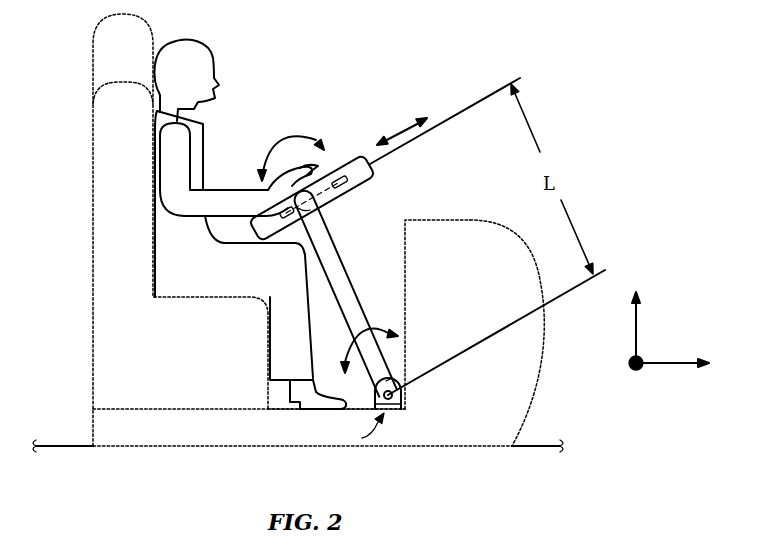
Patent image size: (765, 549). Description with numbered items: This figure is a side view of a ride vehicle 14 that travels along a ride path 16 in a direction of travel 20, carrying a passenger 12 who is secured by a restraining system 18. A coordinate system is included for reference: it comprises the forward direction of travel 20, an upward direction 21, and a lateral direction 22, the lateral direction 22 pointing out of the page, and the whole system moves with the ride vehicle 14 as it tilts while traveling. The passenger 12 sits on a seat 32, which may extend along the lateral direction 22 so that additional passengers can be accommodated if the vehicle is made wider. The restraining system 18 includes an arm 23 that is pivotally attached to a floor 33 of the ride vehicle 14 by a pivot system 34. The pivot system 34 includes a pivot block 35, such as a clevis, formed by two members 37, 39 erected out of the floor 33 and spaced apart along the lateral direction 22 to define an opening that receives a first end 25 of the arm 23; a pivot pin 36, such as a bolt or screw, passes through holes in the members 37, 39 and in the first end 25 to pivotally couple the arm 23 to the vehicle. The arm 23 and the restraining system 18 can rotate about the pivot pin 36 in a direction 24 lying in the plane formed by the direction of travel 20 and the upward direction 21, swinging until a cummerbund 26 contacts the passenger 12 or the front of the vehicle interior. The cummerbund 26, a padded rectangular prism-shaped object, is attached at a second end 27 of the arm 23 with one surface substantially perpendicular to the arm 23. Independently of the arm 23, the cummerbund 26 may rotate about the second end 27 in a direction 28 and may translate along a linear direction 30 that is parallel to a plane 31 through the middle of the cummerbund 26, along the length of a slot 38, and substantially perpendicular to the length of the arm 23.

The passenger 12 is at (189, 42).
The ride vehicle 14 is at (541, 260).
The ride path 16 is at (530, 450).
The restraining system 18 is at (387, 223).
The direction of travel 20 is at (676, 358).
The upward direction 21 is at (638, 320).
The lateral direction 22 is at (638, 373).
The arm 23 is at (342, 264).
The direction 24 is at (363, 328).
The first end 25 is at (386, 381).
The cummerbund 26 is at (358, 201).
The second end 27 is at (322, 206).
The direction 28 is at (287, 141).
The linear direction 30 is at (406, 129).
The plane 31 is at (252, 236).
The seat 32 is at (172, 298).
The floor 33 is at (357, 410).
The pivot system 34 is at (359, 430).
The pivot block 35 is at (392, 411).
The pivot pin 36 is at (403, 395).
The member 37 is at (375, 403).
The slot 38 is at (327, 175).
The member 39 is at (402, 388).